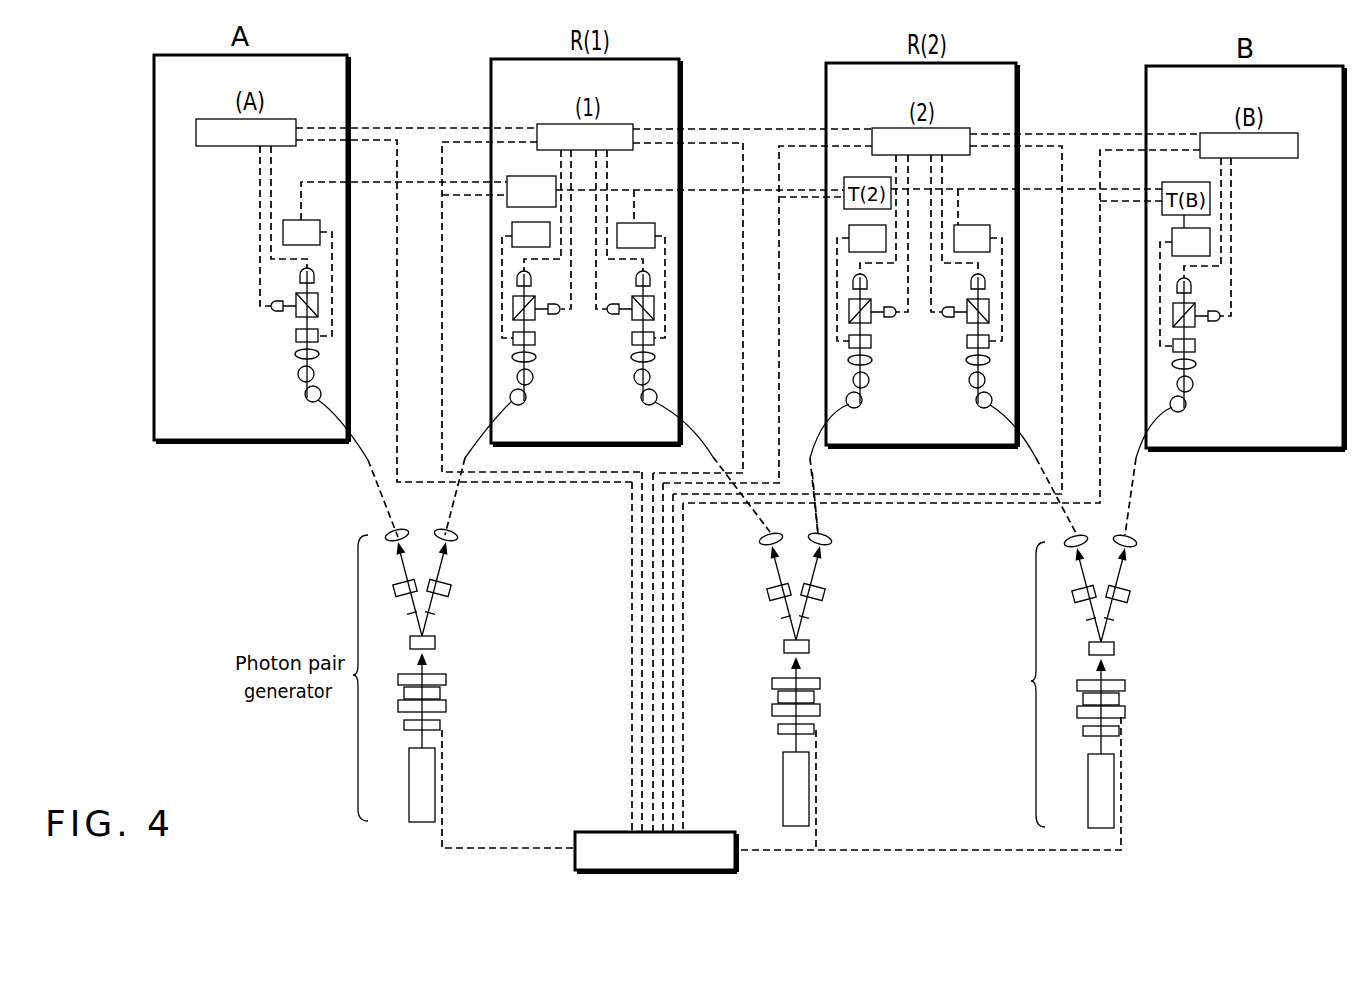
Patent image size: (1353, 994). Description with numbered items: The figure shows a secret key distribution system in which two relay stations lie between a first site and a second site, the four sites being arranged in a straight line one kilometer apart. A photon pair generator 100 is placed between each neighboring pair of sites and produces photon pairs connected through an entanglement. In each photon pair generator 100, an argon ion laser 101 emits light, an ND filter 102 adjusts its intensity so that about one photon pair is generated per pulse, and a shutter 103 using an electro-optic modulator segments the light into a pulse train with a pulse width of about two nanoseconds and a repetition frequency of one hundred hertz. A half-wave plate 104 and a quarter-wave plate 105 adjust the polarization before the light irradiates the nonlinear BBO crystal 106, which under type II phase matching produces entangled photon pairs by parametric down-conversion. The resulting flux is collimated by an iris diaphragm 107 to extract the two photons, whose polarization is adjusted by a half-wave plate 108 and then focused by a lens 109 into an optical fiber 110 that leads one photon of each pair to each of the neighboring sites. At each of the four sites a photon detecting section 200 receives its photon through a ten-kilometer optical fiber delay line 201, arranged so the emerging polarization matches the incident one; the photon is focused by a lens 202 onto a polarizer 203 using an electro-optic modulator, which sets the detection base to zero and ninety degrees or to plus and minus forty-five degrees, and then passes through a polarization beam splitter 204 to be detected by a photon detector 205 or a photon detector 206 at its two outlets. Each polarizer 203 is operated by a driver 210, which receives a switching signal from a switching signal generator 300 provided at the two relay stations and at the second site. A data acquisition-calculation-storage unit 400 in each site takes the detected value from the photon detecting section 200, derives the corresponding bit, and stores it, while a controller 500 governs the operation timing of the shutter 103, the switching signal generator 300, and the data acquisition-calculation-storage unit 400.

The photon pair generator 100 is at (1066, 680).
The argon ion laser 101 is at (809, 793).
The ND filter 102 is at (817, 728).
The shutter 103 is at (820, 713).
The half-wave plate 104 is at (815, 694).
The quarter-wave plate 105 is at (820, 681).
The nonlinear BBO crystal 106 is at (810, 648).
The iris diaphragm 107 is at (786, 617).
The half-wave plate 108 is at (767, 595).
The lens 109 is at (758, 542).
The optical fiber 110 is at (823, 532).
The photon detecting section 200 is at (548, 364).
The optical fiber delay line 201 is at (640, 403).
The lens 202 is at (633, 370).
The polarizer 203 is at (633, 341).
The polarization beam splitter 204 is at (655, 312).
The photon detector 205 is at (652, 281).
The photon detector 206 is at (614, 315).
The driver 210 is at (628, 223).
The switching signal generator 300 is at (524, 176).
The data acquisition-calculation-storage unit 400 is at (621, 124).
The controller 500 is at (596, 832).